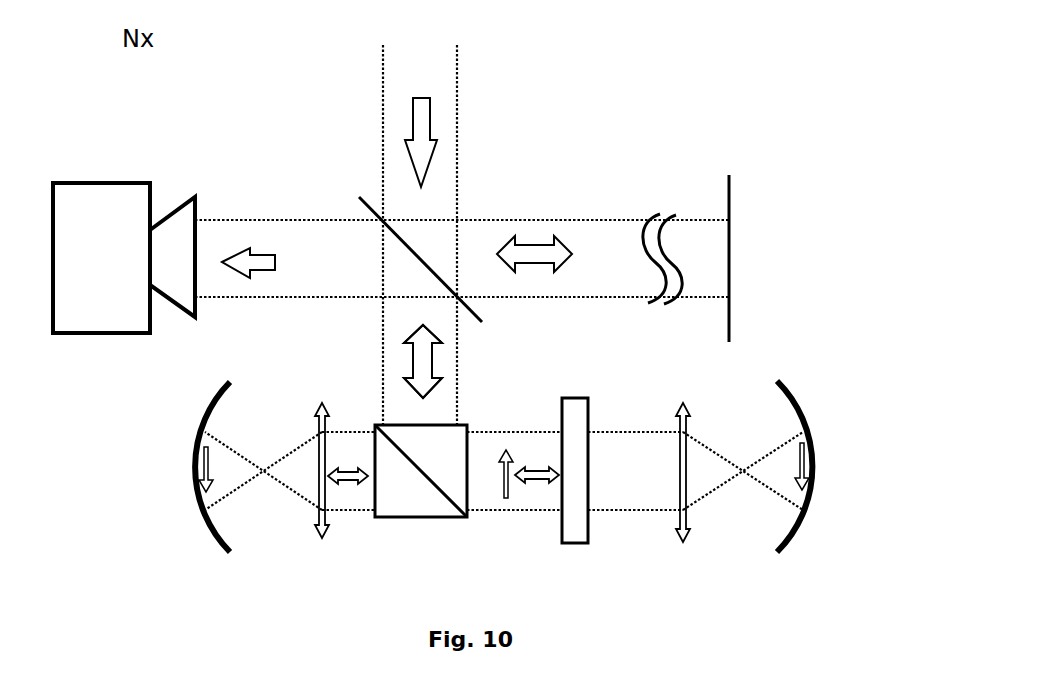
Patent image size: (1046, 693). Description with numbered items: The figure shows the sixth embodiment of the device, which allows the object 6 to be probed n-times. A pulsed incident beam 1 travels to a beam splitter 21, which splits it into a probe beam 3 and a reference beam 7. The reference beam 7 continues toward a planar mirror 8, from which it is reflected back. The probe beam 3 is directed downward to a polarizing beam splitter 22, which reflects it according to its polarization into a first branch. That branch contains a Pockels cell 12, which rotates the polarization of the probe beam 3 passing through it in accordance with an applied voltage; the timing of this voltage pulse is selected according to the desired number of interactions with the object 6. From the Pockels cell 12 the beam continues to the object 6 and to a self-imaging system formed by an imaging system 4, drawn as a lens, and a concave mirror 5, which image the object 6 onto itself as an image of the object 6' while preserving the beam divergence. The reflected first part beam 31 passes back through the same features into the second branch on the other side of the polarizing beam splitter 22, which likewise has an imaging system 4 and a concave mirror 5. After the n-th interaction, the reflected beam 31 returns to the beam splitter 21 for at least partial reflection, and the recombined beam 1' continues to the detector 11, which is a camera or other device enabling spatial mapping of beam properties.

The incident beam 1 is at (467, 119).
The recombined beam 1' is at (235, 197).
The probe beam 3 is at (408, 387).
The reflected first part beam 31 is at (412, 340).
The imaging system 4 is at (683, 405).
The concave mirror 5 is at (200, 493).
The object 6 is at (515, 512).
The image of an object 6' is at (503, 455).
The reference beam 7 is at (535, 250).
The planar mirror 8 is at (730, 282).
The detector 11 is at (150, 322).
The Pockels cell 12 is at (573, 545).
The beam splitter 21 is at (437, 277).
The polarizing beam splitter 22 is at (412, 518).